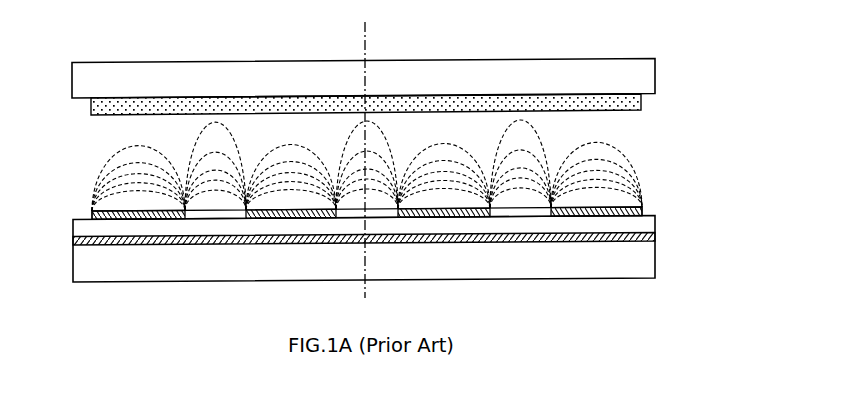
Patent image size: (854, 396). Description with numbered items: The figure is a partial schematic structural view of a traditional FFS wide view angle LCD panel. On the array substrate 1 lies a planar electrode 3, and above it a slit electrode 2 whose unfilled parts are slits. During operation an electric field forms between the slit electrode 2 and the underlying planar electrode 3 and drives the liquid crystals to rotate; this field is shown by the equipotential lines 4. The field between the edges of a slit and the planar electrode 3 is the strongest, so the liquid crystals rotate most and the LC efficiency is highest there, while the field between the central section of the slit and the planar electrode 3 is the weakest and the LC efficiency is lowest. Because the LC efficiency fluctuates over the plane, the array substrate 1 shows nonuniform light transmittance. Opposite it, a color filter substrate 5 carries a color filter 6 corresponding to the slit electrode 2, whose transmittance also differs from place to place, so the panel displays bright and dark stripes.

The array substrate 1 is at (655, 259).
The slit electrode 2 is at (92, 210).
The planar electrode 3 is at (73, 240).
The equipotential lines 4 is at (623, 155).
The color filter substrate 5 is at (656, 74).
The color filter 6 is at (641, 103).